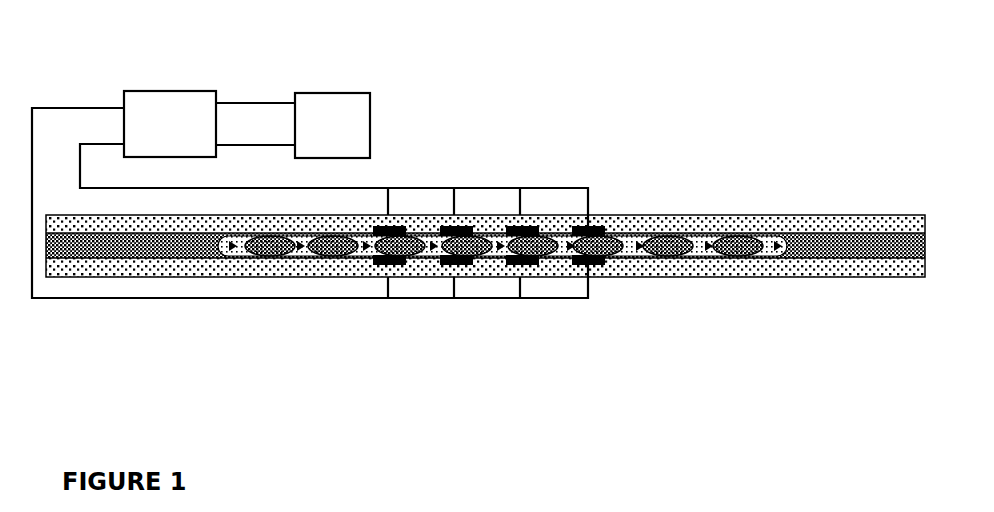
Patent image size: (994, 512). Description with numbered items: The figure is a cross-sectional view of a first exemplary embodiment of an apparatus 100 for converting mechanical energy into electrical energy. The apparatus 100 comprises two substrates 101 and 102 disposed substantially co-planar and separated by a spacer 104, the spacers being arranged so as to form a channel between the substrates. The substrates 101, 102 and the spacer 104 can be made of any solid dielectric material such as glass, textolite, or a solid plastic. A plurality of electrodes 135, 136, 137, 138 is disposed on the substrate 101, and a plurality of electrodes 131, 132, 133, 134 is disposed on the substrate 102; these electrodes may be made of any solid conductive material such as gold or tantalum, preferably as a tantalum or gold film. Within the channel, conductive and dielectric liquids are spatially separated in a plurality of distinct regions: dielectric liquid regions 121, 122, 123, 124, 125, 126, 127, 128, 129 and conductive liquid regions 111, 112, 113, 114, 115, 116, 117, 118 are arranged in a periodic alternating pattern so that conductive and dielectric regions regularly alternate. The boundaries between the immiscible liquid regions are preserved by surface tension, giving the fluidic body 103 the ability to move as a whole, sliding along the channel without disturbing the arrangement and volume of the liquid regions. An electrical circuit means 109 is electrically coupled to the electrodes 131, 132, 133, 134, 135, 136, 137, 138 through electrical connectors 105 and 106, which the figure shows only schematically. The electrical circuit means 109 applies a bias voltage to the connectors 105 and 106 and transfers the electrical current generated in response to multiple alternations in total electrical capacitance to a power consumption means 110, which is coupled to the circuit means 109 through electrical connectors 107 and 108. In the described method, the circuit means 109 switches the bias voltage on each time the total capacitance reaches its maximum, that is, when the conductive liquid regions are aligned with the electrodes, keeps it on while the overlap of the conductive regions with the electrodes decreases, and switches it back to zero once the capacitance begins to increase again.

The apparatus 100 is at (840, 44).
The substrate 101 is at (797, 208).
The substrate 102 is at (92, 289).
The fluidic body 103 is at (217, 253).
The spacer 104 is at (822, 247).
The electrical connector 105 is at (369, 184).
The electrical connector 106 is at (60, 95).
The electrical connector 107 is at (245, 97).
The electrical connector 108 is at (243, 137).
The electrical circuit means 109 is at (197, 87).
The power consumption means 110 is at (378, 85).
The conductive liquid region 111 is at (270, 250).
The conductive liquid region 112 is at (333, 250).
The conductive liquid region 113 is at (400, 250).
The conductive liquid region 114 is at (467, 250).
The conductive liquid region 115 is at (533, 250).
The conductive liquid region 116 is at (598, 250).
The conductive liquid region 117 is at (668, 250).
The conductive liquid region 118 is at (738, 250).
The dielectric liquid region 121 is at (233, 252).
The dielectric liquid region 122 is at (300, 252).
The dielectric liquid region 123 is at (366, 252).
The dielectric liquid region 124 is at (433, 252).
The dielectric liquid region 125 is at (500, 252).
The dielectric liquid region 126 is at (571, 252).
The dielectric liquid region 127 is at (640, 252).
The dielectric liquid region 128 is at (708, 252).
The dielectric liquid region 129 is at (778, 252).
The electrode 131 is at (389, 265).
The electrode 132 is at (456, 265).
The electrode 133 is at (522, 265).
The electrode 134 is at (588, 265).
The electrode 135 is at (396, 222).
The electrode 136 is at (468, 222).
The electrode 137 is at (538, 222).
The electrode 138 is at (608, 222).